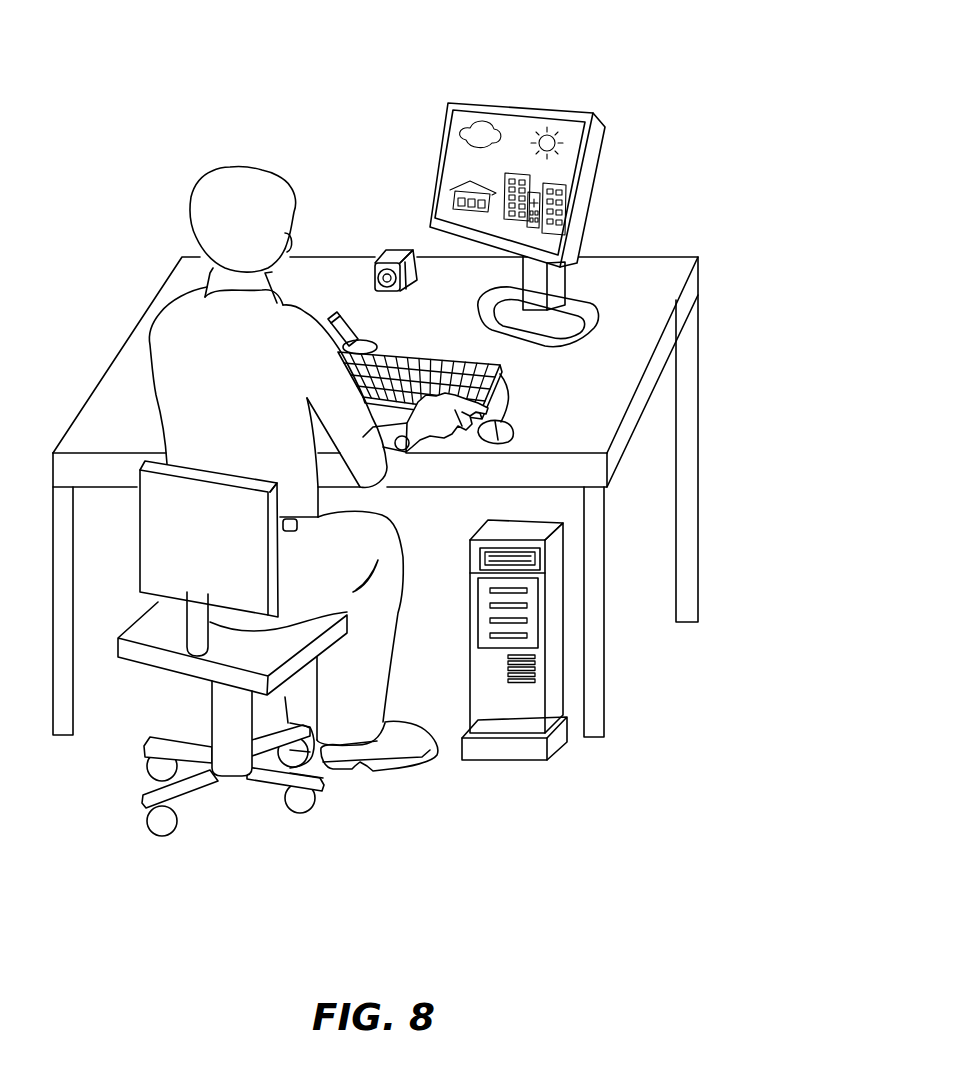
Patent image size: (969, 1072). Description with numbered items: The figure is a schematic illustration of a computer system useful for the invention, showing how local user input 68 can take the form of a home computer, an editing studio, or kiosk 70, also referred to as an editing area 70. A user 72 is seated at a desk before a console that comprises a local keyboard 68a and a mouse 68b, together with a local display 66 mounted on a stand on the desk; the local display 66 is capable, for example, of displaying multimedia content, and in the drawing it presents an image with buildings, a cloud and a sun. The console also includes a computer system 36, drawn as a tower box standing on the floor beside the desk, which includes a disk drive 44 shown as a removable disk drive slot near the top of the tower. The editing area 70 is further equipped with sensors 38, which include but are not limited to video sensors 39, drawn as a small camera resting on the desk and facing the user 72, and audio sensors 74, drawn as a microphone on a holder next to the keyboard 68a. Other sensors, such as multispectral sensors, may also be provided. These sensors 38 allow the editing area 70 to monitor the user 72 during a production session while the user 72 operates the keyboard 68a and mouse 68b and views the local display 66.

The computer system 36 is at (508, 750).
The sensors 38 is at (399, 258).
The video sensors 39 is at (378, 262).
The disk drive 44 is at (483, 557).
The local display 66 is at (536, 87).
The local user input 68 is at (631, 222).
The local keyboard 68a is at (502, 373).
The mouse 68b is at (513, 431).
The editing area 70 is at (646, 90).
The user 72 is at (243, 376).
The audio sensors 74 is at (333, 314).